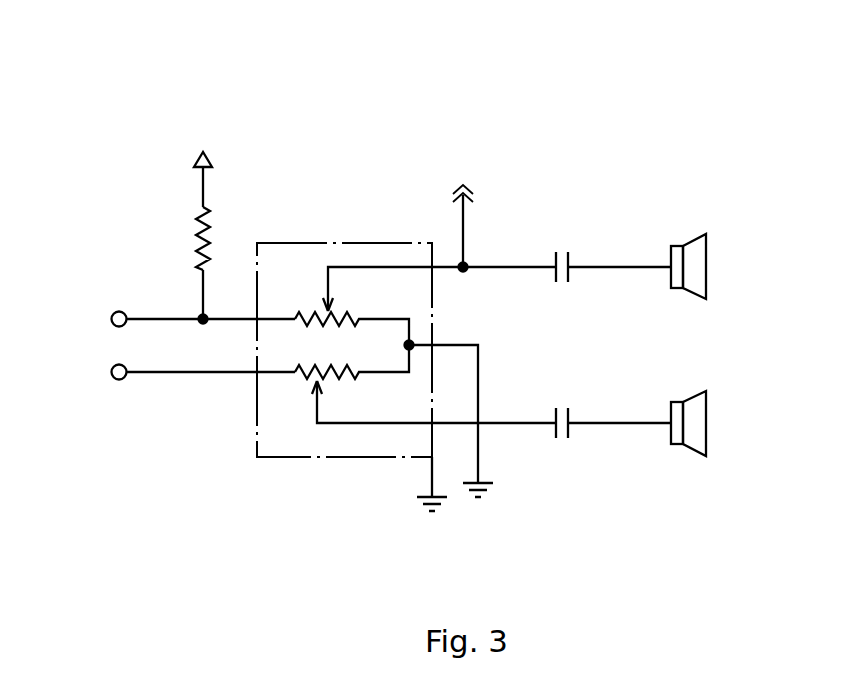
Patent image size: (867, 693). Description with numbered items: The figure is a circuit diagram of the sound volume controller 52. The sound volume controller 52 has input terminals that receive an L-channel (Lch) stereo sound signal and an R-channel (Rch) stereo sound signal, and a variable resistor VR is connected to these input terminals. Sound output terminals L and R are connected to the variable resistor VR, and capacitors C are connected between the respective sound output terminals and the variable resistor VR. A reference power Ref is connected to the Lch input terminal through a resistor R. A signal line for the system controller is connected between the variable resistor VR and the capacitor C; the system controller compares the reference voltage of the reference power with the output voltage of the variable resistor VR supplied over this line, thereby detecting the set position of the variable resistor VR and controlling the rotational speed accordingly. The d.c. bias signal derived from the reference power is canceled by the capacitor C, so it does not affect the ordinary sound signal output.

The sound volume controller 52 is at (628, 173).
The resistor R is at (190, 235).
The variable resistor VR is at (344, 350).
The capacitor C is at (569, 326).